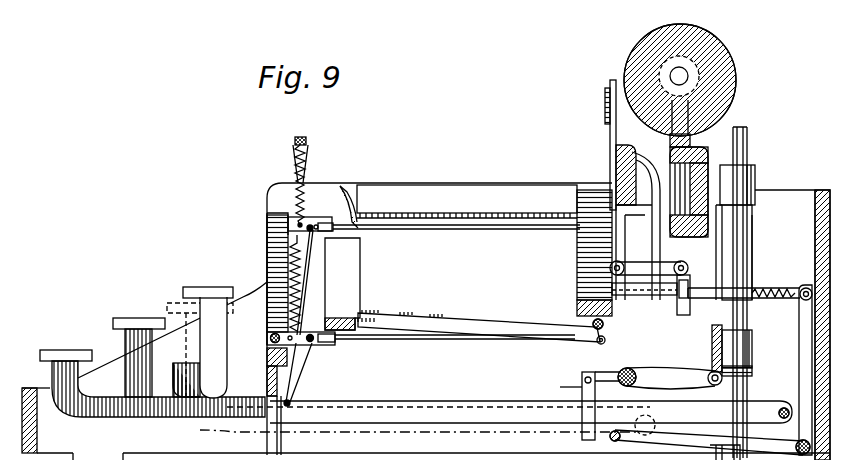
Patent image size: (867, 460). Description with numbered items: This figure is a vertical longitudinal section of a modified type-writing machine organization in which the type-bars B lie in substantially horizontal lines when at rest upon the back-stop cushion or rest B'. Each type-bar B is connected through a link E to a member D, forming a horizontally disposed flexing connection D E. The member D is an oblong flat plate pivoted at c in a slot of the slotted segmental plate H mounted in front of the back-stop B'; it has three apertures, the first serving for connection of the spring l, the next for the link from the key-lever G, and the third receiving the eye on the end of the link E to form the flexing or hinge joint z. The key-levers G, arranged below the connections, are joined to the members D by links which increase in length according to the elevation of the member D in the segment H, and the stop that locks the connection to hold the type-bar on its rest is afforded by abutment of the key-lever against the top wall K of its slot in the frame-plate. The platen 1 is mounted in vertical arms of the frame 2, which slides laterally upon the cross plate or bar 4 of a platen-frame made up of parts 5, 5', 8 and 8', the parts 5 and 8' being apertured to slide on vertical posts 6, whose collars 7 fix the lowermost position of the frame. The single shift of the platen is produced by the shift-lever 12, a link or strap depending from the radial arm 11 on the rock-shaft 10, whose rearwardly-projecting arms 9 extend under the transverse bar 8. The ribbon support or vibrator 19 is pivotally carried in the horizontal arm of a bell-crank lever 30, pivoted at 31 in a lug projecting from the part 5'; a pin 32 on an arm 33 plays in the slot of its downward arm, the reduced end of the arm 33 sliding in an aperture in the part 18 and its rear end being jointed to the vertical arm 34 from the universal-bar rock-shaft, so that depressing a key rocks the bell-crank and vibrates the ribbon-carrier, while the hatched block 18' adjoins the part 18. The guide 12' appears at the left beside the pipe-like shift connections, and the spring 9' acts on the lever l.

The platen 1 is at (722, 93).
The ribbon support or vibrator 19 is at (610, 150).
The hatched block 18' is at (639, 172).
The part 18 is at (638, 226).
The frame 2 is at (689, 192).
The cross plate or bar 4 is at (730, 185).
The frame part 5 is at (755, 292).
The carriage-frame part 5' is at (746, 252).
The vertical posts 6 is at (748, 254).
The arm 33 is at (750, 296).
The bell-crank lever 30 is at (636, 266).
The pivot 31 is at (682, 262).
The pin 32 is at (676, 308).
The transverse bar 8 is at (739, 339).
The frame part 8' is at (760, 352).
The collars 7 is at (747, 370).
The arm 34 is at (810, 343).
The rock-shaft 10 is at (637, 370).
The radial arm 11 is at (605, 378).
The rearwardly-projecting arms 9 is at (417, 354).
The pipe 12' is at (141, 357).
The shift-lever 12 is at (491, 372).
The spring l is at (297, 177).
The spring 9' is at (312, 315).
The slotted segmental plate H is at (290, 247).
The pivot c is at (270, 338).
The flexing or hinge joint z is at (334, 343).
The member D is at (327, 346).
The top wall K is at (272, 390).
The link E is at (454, 229).
The type-bars B is at (476, 264).
The back-stop cushion or rest B' is at (353, 284).
The key-levers G is at (412, 391).